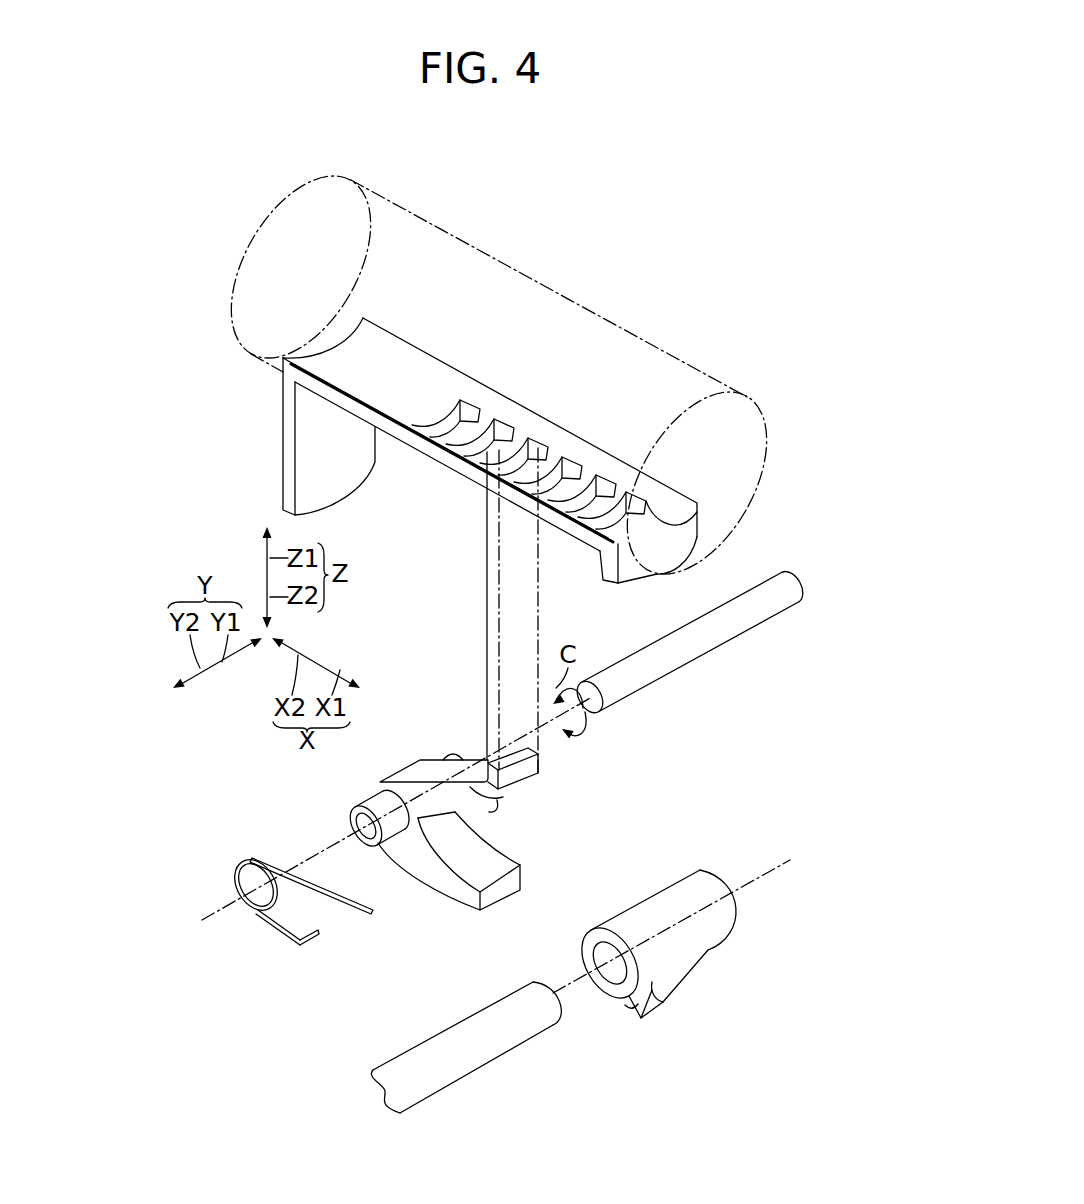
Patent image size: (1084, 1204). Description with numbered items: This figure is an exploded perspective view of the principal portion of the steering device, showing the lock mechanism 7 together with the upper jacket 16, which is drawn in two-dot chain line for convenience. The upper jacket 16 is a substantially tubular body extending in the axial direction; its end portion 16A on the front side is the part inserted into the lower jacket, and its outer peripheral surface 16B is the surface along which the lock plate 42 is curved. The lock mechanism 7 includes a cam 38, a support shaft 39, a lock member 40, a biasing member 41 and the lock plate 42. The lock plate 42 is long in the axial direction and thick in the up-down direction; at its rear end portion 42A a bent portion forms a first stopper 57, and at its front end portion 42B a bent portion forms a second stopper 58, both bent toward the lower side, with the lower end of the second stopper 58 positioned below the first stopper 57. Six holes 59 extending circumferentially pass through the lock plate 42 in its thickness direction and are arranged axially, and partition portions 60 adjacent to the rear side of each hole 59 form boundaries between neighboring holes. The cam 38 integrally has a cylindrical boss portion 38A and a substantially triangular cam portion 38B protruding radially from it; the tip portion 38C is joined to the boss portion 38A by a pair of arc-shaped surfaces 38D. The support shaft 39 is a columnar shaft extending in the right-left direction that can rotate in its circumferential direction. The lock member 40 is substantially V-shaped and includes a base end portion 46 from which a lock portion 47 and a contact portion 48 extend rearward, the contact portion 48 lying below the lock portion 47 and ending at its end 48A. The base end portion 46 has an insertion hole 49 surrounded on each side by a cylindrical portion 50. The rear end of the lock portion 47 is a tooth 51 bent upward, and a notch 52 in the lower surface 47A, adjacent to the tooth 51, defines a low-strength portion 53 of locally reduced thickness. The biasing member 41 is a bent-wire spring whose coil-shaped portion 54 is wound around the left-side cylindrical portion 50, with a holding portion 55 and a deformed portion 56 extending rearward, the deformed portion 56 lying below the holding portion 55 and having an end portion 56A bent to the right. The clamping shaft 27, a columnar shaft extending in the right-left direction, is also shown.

The upper jacket 16 is at (499, 374).
The end portion of the upper jacket 16A is at (458, 281).
The outer peripheral surface of the upper jacket 16B is at (658, 385).
The lock plate 42 is at (495, 455).
The end portion of the lock plate 42A is at (653, 528).
The end portion of the lock plate 42B is at (327, 355).
The first stopper 57 is at (632, 570).
The second stopper 58 is at (343, 483).
The holes 59 is at (457, 414).
The partition portions 60 is at (497, 452).
The support shaft 39 is at (775, 598).
The lock member 40 is at (451, 816).
The base end portion 46 is at (385, 795).
The lock portion 47 is at (425, 772).
The lower surface of the lock portion 47A is at (452, 817).
The contact portion 48 is at (430, 877).
The arm end portion 48A is at (475, 873).
The insertion hole 49 is at (357, 824).
The cylindrical portion 50 is at (365, 812).
The tooth 51 is at (525, 773).
The notch 52 is at (497, 806).
The low-strength portion 53 is at (523, 788).
The biasing member 41 is at (272, 904).
The coil-shaped portion 54 is at (265, 862).
The holding portion 55 is at (340, 897).
The deformed portion 56 is at (265, 925).
The end portion of the deformed portion 56A is at (313, 935).
The cam 38 is at (658, 951).
The boss portion 38A is at (707, 880).
The cam portion 38B is at (658, 1007).
The tip portion 38C is at (638, 1020).
The arc-shaped surfaces 38D is at (683, 985).
The clamping shaft 27 is at (437, 1075).
The lock mechanism 7 is at (580, 982).